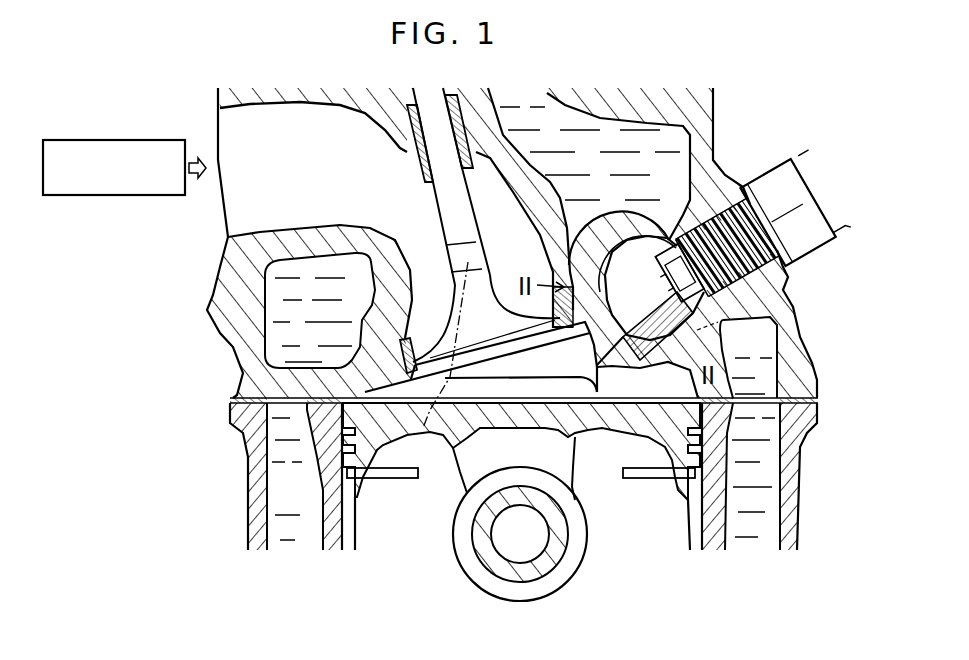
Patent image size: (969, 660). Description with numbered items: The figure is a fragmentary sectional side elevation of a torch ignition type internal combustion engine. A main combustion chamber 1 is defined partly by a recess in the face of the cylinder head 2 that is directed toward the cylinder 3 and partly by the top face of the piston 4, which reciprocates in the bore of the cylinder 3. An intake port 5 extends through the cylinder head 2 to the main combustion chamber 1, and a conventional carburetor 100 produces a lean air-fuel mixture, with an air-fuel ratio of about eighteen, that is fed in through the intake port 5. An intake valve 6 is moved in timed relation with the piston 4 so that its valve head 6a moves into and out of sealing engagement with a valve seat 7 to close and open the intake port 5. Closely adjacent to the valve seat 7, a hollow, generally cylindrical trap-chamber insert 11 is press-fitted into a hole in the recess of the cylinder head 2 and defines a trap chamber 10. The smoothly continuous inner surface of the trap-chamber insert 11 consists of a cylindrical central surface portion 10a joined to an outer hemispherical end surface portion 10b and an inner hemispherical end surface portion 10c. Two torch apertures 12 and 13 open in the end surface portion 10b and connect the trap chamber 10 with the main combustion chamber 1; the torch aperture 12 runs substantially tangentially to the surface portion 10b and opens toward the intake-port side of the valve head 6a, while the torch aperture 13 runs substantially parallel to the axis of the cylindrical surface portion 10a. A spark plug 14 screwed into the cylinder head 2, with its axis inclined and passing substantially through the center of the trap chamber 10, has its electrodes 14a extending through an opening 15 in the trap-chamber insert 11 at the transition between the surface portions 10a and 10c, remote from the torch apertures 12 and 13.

The main combustion chamber 1 is at (494, 393).
The cylinder head 2 is at (245, 372).
The cylinder 3 is at (323, 490).
The piston 4 is at (350, 520).
The intake port 5 is at (345, 185).
The intake valve 6 is at (452, 318).
The valve head 6a is at (440, 360).
The valve seat 7 is at (412, 347).
The trap chamber 10 is at (655, 284).
The cylindrical central surface portion 10a is at (747, 357).
The hemispherical end surface portion 10b is at (615, 370).
The hemispherical end surface portion 10c is at (631, 232).
The trap-chamber insert 11 is at (607, 250).
The torch aperture 12 is at (594, 342).
The torch aperture 13 is at (717, 327).
The spark plug 14 is at (773, 175).
The electrodes 14a is at (710, 303).
The opening 15 is at (669, 228).
The carburetor 100 is at (130, 140).